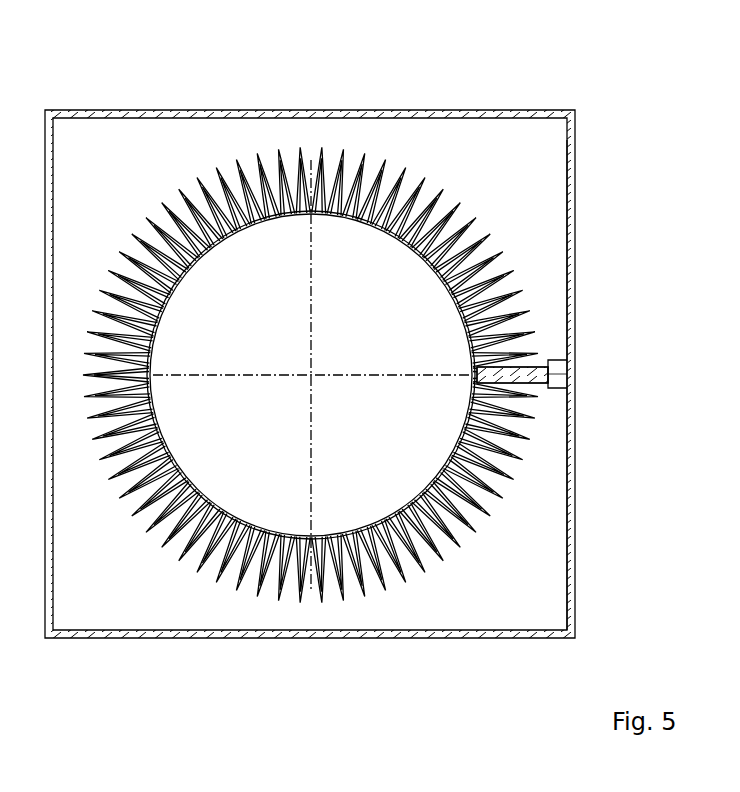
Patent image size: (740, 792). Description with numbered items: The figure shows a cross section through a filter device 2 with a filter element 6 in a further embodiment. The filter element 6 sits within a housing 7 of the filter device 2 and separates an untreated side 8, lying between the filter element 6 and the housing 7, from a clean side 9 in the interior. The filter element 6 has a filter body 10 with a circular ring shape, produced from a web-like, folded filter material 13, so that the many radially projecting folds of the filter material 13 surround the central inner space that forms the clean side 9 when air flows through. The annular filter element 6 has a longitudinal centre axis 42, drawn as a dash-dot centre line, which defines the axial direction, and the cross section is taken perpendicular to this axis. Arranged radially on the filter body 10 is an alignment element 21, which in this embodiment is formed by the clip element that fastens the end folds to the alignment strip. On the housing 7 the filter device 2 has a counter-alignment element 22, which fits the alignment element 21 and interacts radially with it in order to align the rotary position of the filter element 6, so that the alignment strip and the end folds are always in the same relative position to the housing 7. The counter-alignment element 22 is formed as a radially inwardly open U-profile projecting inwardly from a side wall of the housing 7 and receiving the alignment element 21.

The filter device 2 is at (491, 106).
The filter element 6 is at (314, 331).
The housing 7 is at (581, 286).
The untreated side 8 is at (112, 191).
The clean side 9 is at (369, 320).
The filter body 10 is at (236, 150).
The folded filter material 13 is at (318, 158).
The alignment element 21 is at (550, 375).
The counter-alignment element 22 is at (557, 392).
The longitudinal centre axis 42 is at (316, 378).